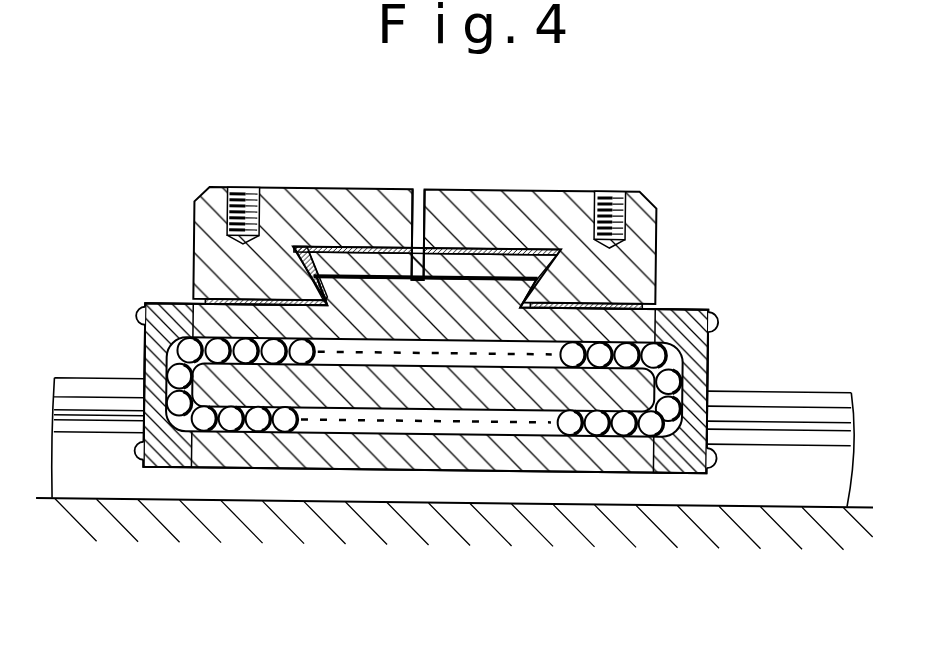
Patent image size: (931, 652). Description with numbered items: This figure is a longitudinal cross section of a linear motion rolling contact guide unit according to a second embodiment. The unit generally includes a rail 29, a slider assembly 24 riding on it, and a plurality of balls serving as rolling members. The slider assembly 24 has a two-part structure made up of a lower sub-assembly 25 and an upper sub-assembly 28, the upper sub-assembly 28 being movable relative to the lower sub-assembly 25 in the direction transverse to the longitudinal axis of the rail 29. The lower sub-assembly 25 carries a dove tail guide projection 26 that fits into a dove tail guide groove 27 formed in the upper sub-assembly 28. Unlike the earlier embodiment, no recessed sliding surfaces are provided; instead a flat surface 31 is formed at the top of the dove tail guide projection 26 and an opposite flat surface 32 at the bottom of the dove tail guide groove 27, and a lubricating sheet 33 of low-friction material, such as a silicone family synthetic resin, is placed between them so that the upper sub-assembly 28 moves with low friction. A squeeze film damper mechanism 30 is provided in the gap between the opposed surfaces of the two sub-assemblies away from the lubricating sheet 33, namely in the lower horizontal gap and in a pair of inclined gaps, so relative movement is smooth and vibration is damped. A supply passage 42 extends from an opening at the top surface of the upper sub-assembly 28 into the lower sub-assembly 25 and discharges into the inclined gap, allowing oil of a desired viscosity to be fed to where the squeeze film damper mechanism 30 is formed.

The slider assembly 24 is at (674, 230).
The lower sub-assembly 25 is at (588, 473).
The dove tail guide projection 26 is at (318, 262).
The dove tail guide groove 27 is at (303, 291).
The upper sub-assembly 28 is at (560, 213).
The rail 29 is at (778, 490).
The squeeze film damper mechanism 30 is at (617, 302).
The flat surface 31 is at (303, 250).
The opposite flat surface 32 is at (497, 252).
The lubricating sheet 33 is at (355, 249).
The supply passage 42 is at (418, 190).